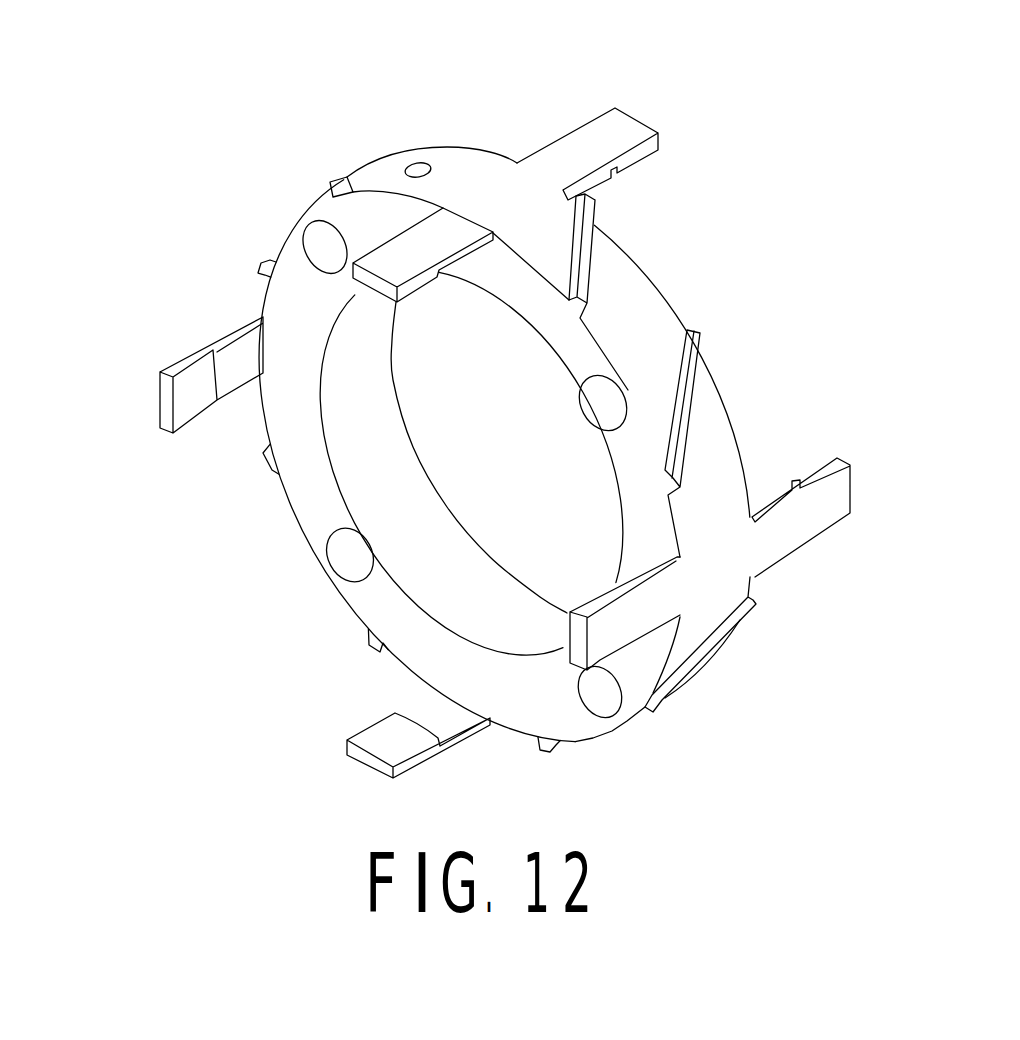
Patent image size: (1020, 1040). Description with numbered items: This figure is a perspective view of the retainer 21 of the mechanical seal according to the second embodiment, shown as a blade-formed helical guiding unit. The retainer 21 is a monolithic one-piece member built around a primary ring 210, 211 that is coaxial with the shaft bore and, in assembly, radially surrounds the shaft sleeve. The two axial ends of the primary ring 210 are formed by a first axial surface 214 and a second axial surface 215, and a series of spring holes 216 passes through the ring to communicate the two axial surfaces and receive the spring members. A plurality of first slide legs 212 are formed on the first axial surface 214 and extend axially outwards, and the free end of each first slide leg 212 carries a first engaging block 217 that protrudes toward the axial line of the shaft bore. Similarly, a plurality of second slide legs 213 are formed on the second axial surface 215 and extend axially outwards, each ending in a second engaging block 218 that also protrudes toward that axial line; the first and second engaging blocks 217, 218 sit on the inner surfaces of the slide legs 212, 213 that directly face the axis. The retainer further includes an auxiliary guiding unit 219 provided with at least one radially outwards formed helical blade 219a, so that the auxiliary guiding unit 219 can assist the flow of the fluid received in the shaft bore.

The retainer 21 is at (213, 275).
The primary ring 210 is at (354, 491).
The primary ring 211 is at (718, 538).
The first slide leg 212 is at (387, 263).
The second slide leg 213 is at (596, 132).
The first axial surface 214 is at (390, 208).
The second axial surface 215 is at (472, 148).
The spring hole 216 is at (320, 243).
The first engaging block 217 is at (568, 626).
The second engaging block 218 is at (810, 470).
The auxiliary guiding unit 219 is at (640, 238).
The helical blade 219a is at (703, 370).